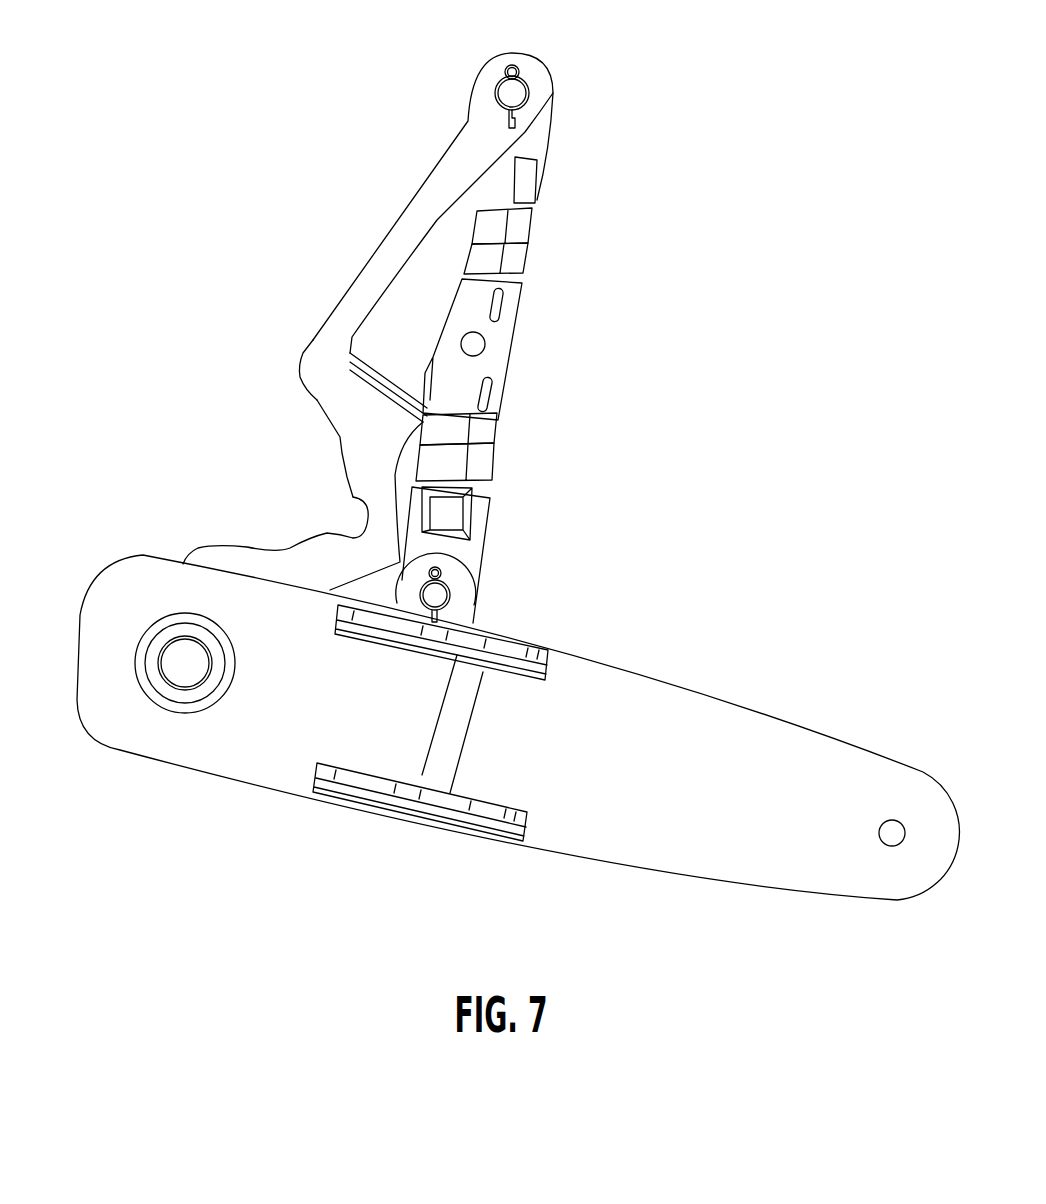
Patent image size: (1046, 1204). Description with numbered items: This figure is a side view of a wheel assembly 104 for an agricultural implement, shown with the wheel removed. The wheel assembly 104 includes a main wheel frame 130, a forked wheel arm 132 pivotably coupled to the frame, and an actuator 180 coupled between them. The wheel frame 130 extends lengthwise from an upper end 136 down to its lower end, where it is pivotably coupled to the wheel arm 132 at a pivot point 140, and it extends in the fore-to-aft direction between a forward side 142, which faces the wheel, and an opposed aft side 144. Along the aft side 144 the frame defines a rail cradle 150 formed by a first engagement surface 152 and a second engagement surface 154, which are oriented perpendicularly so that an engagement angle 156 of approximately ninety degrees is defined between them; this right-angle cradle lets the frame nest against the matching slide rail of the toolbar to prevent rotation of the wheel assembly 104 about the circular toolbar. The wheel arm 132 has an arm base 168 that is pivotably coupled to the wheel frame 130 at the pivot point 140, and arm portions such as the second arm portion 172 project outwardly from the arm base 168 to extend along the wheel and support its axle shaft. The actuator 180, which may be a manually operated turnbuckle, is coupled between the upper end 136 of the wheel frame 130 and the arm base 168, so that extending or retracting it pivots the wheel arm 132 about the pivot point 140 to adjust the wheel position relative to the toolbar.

The wheel assembly 104 is at (792, 252).
The main wheel frame 130 is at (378, 245).
The forked wheel arm 132 is at (328, 800).
The upper end 136 is at (495, 65).
The pivot point 140 is at (177, 657).
The forward side 142 is at (428, 362).
The aft side 144 is at (303, 350).
The rail cradle 150 is at (188, 436).
The first engagement surface 152 is at (345, 470).
The second engagement surface 154 is at (340, 502).
The engagement angle 156 is at (338, 500).
The arm base 168 is at (218, 753).
The second arm portion 172 is at (670, 718).
The actuator 180 is at (503, 413).